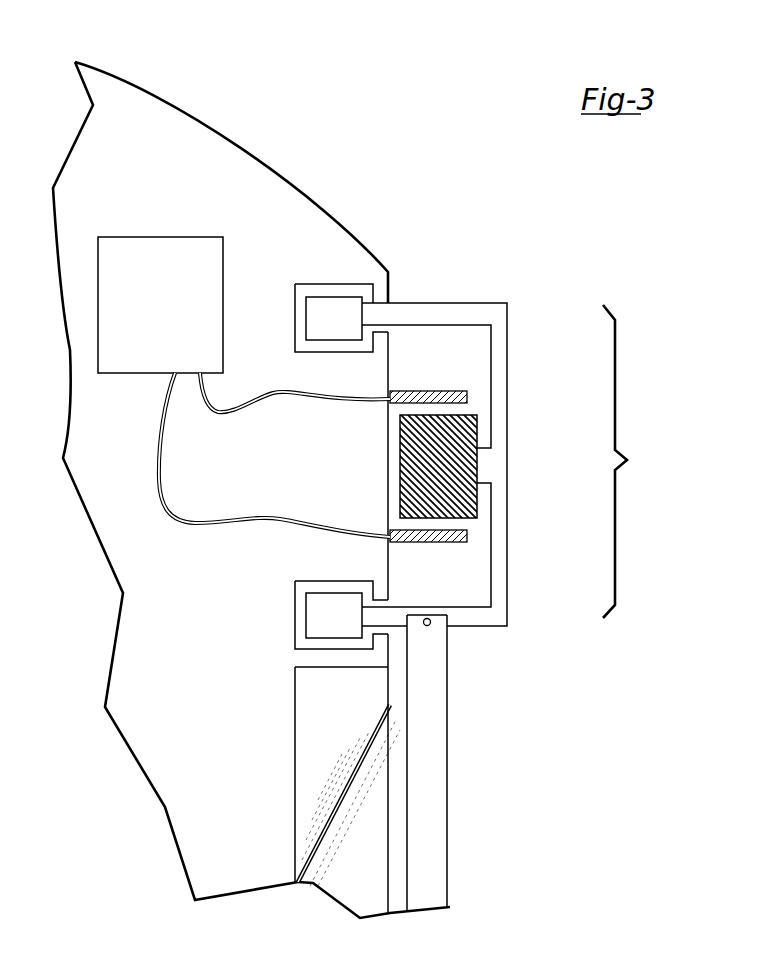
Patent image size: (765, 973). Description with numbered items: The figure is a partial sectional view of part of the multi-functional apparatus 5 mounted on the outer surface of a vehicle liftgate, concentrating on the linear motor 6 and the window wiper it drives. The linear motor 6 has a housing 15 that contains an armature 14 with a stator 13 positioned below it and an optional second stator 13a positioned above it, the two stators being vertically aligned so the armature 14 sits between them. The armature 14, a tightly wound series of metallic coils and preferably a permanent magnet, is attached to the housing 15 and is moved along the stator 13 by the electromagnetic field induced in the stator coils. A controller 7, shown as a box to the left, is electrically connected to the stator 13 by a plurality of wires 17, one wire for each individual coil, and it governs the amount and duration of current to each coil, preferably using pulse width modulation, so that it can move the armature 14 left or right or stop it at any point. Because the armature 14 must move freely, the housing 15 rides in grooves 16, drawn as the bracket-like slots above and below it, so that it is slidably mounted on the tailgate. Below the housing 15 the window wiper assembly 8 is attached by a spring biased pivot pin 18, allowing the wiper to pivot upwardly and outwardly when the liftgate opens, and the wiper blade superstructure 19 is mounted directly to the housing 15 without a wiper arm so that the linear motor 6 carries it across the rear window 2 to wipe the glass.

The rear window 2 is at (312, 746).
The multi-functional apparatus 5 is at (286, 154).
The linear motor 6 is at (627, 461).
The controller 7 is at (128, 242).
The window wiper assembly 8 is at (464, 764).
The stator 13 is at (435, 543).
The second stator 13a is at (437, 390).
The armature 14 is at (388, 462).
The housing 15 is at (445, 315).
The grooves 16 is at (294, 332).
The wires 17 is at (232, 414).
The spring biased pivot pin 18 is at (430, 626).
The wiper blade superstructure 19 is at (433, 807).